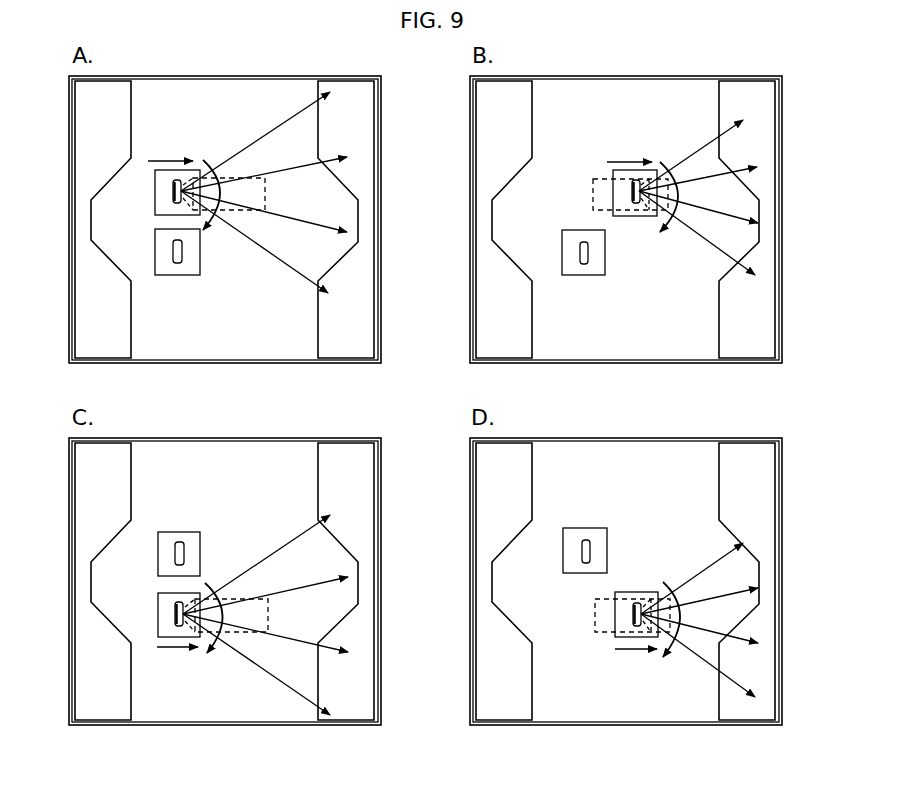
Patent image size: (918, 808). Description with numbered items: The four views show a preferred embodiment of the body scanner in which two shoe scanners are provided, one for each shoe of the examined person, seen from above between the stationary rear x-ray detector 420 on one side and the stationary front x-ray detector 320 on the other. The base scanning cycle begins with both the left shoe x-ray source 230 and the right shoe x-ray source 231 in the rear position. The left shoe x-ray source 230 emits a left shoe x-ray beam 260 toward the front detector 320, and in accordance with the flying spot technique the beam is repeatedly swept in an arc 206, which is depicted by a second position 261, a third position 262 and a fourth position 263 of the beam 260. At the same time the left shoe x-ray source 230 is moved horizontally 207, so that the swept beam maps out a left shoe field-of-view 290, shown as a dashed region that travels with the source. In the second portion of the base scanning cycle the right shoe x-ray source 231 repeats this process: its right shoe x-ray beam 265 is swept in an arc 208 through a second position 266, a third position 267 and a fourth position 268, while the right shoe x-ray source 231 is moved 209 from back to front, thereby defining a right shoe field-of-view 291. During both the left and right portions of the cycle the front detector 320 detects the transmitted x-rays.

In FIG. 9A, the rear x-ray detector 420 is at (80, 103).
In FIG. 9B, the rear x-ray detector 420 is at (482, 103).
In FIG. 9C, the rear x-ray detector 420 is at (80, 465).
In FIG. 9D, the rear x-ray detector 420 is at (482, 465).
In FIG. 9A, the front x-ray detector 320 is at (368, 103).
In FIG. 9B, the front x-ray detector 320 is at (769, 103).
In FIG. 9C, the front x-ray detector 320 is at (368, 465).
In FIG. 9D, the front x-ray detector 320 is at (769, 465).
In FIG. 9A, the left shoe x-ray source 230 is at (154, 194).
In FIG. 9B, the left shoe x-ray source 230 is at (610, 213).
In FIG. 9C, the left shoe x-ray source 230 is at (154, 557).
In FIG. 9D, the left shoe x-ray source 230 is at (559, 557).
In FIG. 9A, the right shoe x-ray source 231 is at (151, 254).
In FIG. 9B, the right shoe x-ray source 231 is at (558, 250).
In FIG. 9C, the right shoe x-ray source 231 is at (154, 618).
In FIG. 9D, the right shoe x-ray source 231 is at (614, 636).
In FIG. 9A, the arc 206 is at (206, 164).
In FIG. 9B, the arc 206 is at (664, 164).
In FIG. 9A, the horizontal movement 207 is at (179, 157).
In FIG. 9B, the horizontal movement 207 is at (637, 160).
In FIG. 9C, the arc 208 is at (211, 654).
In FIG. 9D, the arc 208 is at (667, 654).
In FIG. 9C, the movement from back to front 209 is at (178, 654).
In FIG. 9D, the movement from back to front 209 is at (638, 656).
In FIG. 9A, the left shoe x-ray beam 260 is at (253, 142).
In FIG. 9B, the left shoe x-ray beam 260 is at (712, 142).
In FIG. 9A, the second position 261 is at (275, 172).
In FIG. 9B, the second position 261 is at (717, 176).
In FIG. 9A, the third position 262 is at (272, 222).
In FIG. 9B, the third position 262 is at (732, 222).
In FIG. 9A, the fourth position 263 is at (247, 245).
In FIG. 9B, the fourth position 263 is at (703, 248).
In FIG. 9C, the right shoe x-ray beam 265 is at (253, 566).
In FIG. 9D, the right shoe x-ray beam 265 is at (707, 561).
In FIG. 9C, the second position 266 is at (278, 596).
In FIG. 9D, the second position 266 is at (719, 596).
In FIG. 9C, the third position 267 is at (276, 644).
In FIG. 9D, the third position 267 is at (716, 639).
In FIG. 9C, the fourth position 268 is at (250, 669).
In FIG. 9D, the fourth position 268 is at (707, 669).
In FIG. 9A, the left shoe field-of-view 290 is at (271, 202).
In FIG. 9B, the left shoe field-of-view 290 is at (591, 195).
In FIG. 9C, the right shoe field-of-view 291 is at (271, 622).
In FIG. 9D, the right shoe field-of-view 291 is at (594, 618).